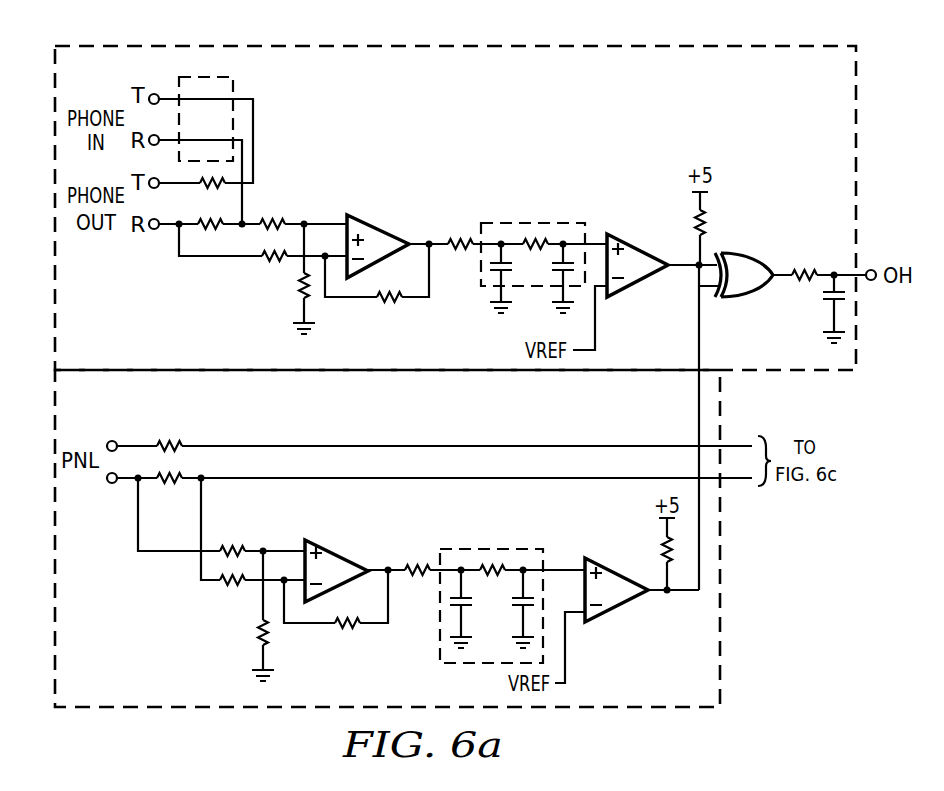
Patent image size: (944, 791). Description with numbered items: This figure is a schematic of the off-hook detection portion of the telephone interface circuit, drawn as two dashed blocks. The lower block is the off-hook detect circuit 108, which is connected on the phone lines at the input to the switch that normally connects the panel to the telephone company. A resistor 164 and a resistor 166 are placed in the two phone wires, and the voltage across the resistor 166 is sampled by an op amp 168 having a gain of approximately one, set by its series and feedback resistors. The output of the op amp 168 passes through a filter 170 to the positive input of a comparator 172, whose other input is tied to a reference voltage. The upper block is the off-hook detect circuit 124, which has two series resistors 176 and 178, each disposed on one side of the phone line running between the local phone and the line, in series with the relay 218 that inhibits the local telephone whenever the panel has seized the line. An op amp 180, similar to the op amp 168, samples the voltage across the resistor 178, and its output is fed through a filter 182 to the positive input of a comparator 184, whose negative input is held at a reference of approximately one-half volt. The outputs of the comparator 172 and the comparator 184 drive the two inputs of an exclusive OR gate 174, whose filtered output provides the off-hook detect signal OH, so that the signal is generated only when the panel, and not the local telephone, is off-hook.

The off-hook detect circuit 124 is at (788, 84).
The off-hook detect circuit 108 is at (96, 681).
The relay 218 is at (233, 91).
The series resistor 176 is at (226, 185).
The series resistor 178 is at (207, 228).
The op amp 180 is at (352, 214).
The filter 182 is at (531, 222).
The comparator 184 is at (629, 245).
The exclusive OR gate 174 is at (744, 256).
The resistor 164 is at (167, 441).
The resistor 166 is at (171, 486).
The op amp 168 is at (338, 550).
The filter 170 is at (499, 538).
The comparator 172 is at (622, 606).